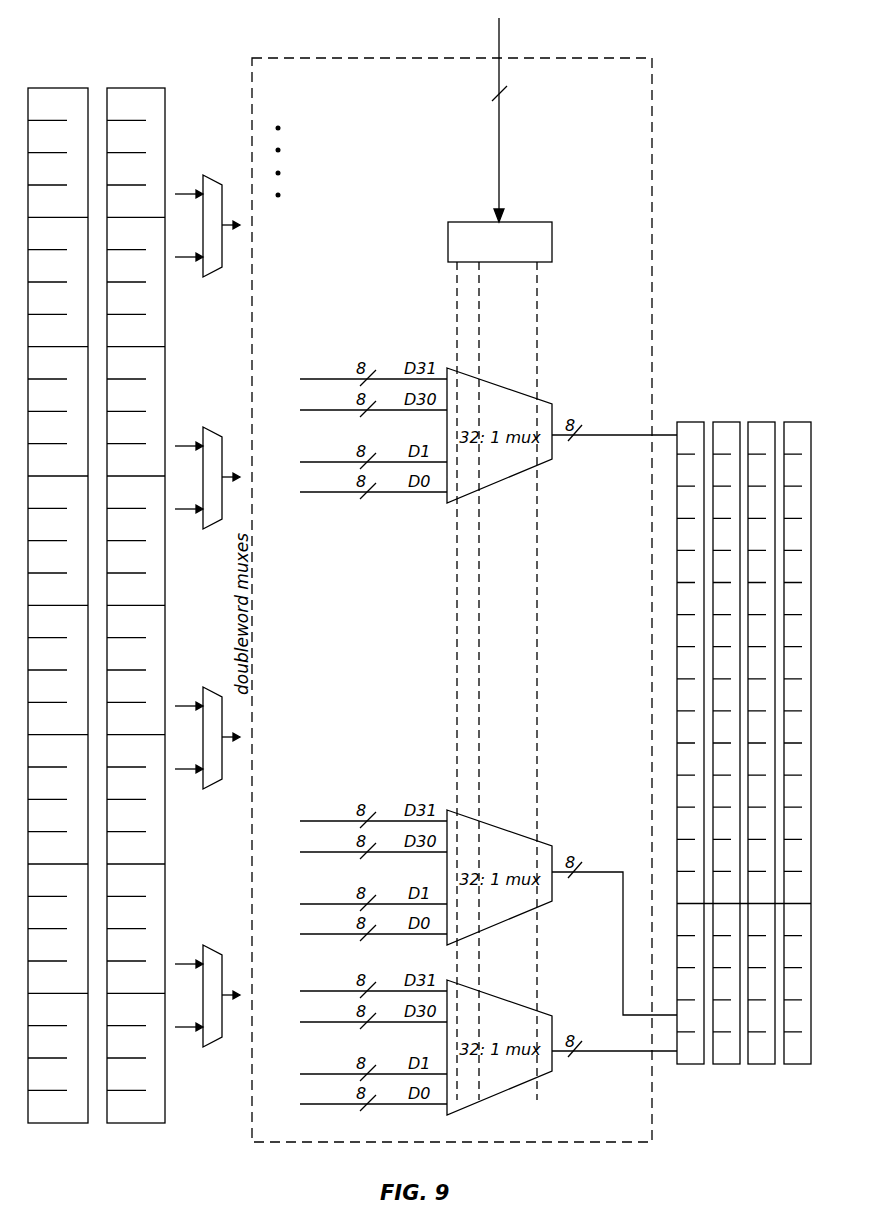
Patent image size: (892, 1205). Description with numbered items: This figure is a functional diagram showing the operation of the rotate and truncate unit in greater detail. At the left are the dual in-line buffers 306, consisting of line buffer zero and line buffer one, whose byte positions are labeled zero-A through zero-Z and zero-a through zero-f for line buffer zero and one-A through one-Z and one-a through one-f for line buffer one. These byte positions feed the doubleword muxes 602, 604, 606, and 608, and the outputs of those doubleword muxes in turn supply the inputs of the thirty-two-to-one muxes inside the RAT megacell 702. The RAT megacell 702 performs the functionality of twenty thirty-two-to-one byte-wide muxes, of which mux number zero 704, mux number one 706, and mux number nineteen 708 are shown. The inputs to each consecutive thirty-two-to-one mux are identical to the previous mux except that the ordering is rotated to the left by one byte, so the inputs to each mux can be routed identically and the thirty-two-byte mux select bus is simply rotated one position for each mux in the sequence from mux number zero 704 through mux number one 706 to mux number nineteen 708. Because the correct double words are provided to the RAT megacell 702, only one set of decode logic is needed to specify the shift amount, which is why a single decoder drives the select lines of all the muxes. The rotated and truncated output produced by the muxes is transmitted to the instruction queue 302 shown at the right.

The instruction queue 302 is at (741, 356).
The dual in-line buffers 306 is at (96, 608).
The doubleword mux 602 is at (207, 1012).
The doubleword mux 604 is at (207, 753).
The doubleword mux 606 is at (207, 493).
The doubleword mux 608 is at (207, 241).
The RAT megacell 702 is at (454, 580).
The mux #0 704 is at (488, 1044).
The mux #1 706 is at (488, 908).
The mux #19 708 is at (488, 431).